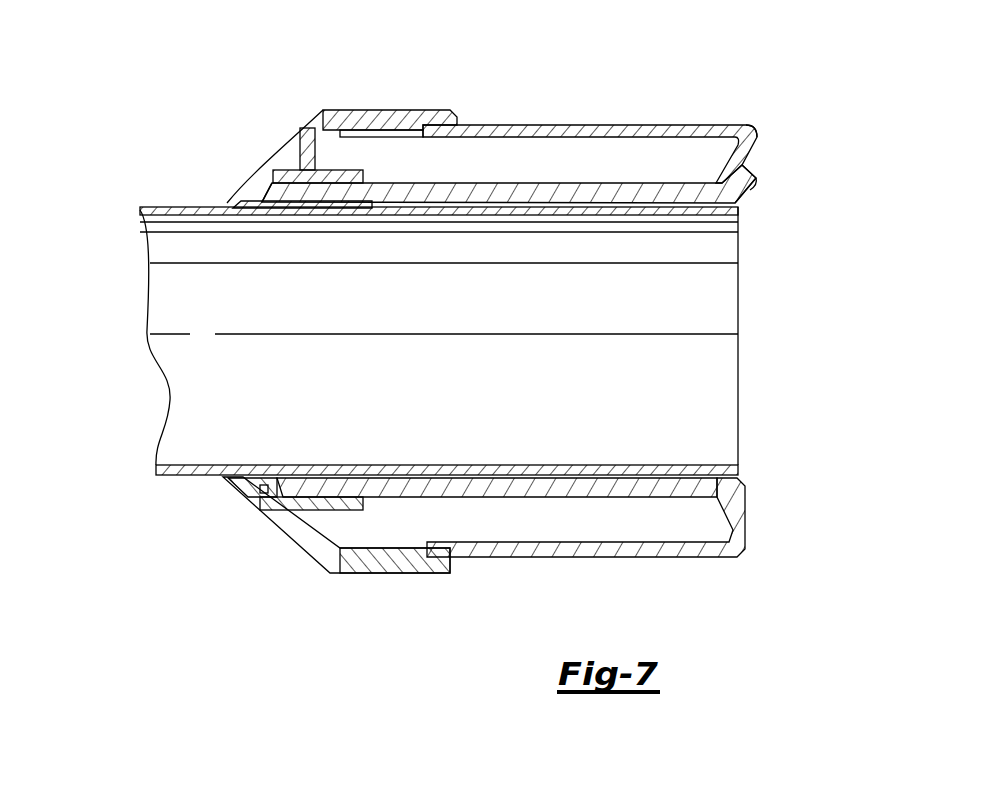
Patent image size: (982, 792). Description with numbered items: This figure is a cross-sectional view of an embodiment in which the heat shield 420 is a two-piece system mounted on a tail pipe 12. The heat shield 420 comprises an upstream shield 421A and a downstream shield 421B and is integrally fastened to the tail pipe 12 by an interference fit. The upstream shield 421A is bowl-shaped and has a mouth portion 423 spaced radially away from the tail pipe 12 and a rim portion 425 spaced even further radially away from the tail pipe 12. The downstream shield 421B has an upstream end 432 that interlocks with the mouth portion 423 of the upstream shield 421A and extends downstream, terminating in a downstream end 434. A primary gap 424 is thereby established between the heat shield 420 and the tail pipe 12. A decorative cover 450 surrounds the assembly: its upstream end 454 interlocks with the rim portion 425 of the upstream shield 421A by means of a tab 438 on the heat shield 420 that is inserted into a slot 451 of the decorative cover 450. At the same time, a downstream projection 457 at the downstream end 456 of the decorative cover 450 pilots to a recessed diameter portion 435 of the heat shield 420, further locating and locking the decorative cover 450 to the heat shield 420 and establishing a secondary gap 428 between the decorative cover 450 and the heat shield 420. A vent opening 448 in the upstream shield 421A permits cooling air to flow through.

The tail pipe 12 is at (140, 212).
The heat shield 420 is at (372, 505).
The upstream shield 421A is at (228, 204).
The downstream shield 421B is at (740, 210).
The mouth portion 423 is at (262, 203).
The primary gap 424 is at (435, 480).
The rim portion 425 is at (418, 112).
The secondary gap 428 is at (570, 153).
The upstream end 432 is at (262, 490).
The downstream end 434 is at (748, 490).
The recessed diameter portion 435 is at (735, 200).
The tab 438 is at (407, 103).
The vent opening 448 is at (305, 150).
The decorative cover 450 is at (640, 127).
The slot 451 is at (420, 136).
The upstream end 454 is at (342, 128).
The downstream end 456 is at (742, 140).
The downstream projection 457 is at (750, 177).